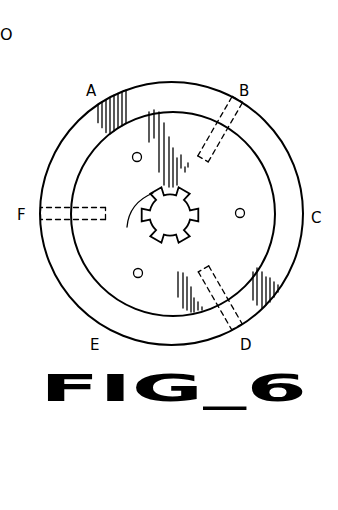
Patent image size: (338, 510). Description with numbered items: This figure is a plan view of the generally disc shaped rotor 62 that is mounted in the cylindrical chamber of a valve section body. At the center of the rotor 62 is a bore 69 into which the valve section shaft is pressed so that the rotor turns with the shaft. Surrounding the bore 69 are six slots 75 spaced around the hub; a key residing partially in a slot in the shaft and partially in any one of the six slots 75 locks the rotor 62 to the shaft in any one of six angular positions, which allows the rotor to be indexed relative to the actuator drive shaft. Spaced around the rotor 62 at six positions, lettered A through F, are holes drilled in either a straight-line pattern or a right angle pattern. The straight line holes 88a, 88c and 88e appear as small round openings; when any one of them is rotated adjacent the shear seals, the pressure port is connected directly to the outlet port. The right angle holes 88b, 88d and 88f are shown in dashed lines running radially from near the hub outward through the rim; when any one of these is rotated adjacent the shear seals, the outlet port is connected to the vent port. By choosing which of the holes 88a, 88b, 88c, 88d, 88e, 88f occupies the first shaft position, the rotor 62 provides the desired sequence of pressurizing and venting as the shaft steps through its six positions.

The rotor 62 is at (171, 82).
The bore 69 is at (191, 197).
The slots 75 is at (152, 240).
The straight line hole 88a is at (134, 160).
The right angle hole 88b is at (244, 109).
The straight line hole 88c is at (243, 216).
The right angle hole 88d is at (243, 324).
The straight line hole 88e is at (138, 278).
The right angle hole 88f is at (32, 227).